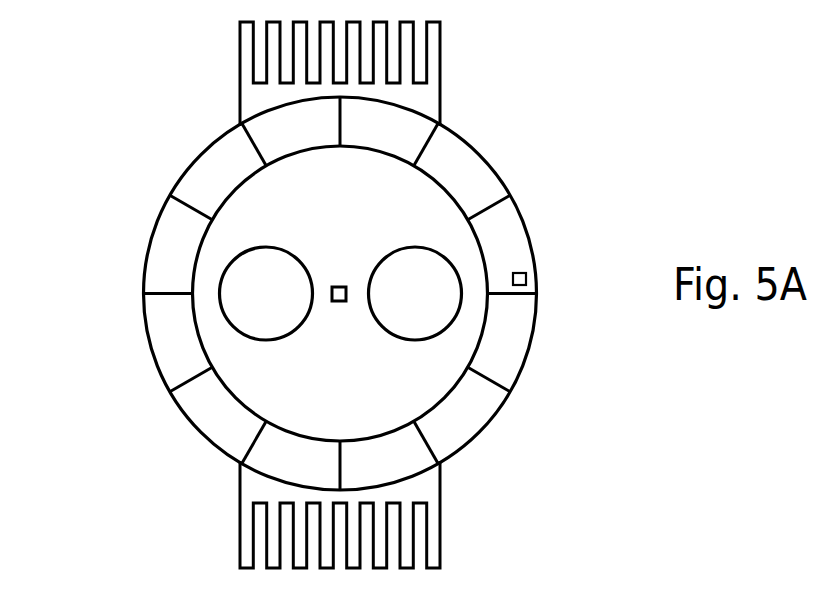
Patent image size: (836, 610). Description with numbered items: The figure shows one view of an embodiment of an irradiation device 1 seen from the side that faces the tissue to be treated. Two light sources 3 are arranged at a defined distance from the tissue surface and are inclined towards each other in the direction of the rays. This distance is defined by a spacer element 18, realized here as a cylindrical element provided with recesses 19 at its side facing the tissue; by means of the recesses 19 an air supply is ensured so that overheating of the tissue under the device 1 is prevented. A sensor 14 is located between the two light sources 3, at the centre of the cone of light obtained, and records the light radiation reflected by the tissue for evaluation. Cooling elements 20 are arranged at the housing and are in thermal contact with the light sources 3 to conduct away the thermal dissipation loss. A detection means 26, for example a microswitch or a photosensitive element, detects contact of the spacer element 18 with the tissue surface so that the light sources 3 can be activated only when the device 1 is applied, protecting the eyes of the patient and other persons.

The irradiation device 1 is at (550, 157).
The light sources 3 is at (272, 288).
The sensor 14 is at (346, 301).
The spacer element 18 is at (123, 220).
The recesses 19 is at (292, 133).
The cooling elements 20 is at (413, 52).
The detection means 26 is at (526, 278).